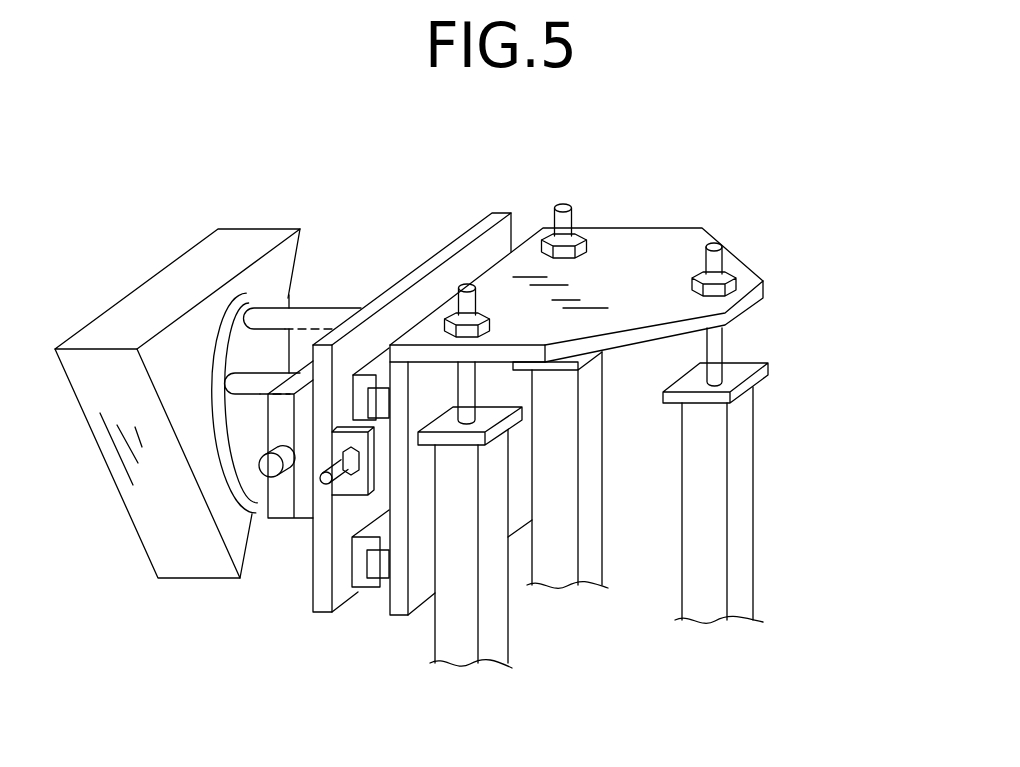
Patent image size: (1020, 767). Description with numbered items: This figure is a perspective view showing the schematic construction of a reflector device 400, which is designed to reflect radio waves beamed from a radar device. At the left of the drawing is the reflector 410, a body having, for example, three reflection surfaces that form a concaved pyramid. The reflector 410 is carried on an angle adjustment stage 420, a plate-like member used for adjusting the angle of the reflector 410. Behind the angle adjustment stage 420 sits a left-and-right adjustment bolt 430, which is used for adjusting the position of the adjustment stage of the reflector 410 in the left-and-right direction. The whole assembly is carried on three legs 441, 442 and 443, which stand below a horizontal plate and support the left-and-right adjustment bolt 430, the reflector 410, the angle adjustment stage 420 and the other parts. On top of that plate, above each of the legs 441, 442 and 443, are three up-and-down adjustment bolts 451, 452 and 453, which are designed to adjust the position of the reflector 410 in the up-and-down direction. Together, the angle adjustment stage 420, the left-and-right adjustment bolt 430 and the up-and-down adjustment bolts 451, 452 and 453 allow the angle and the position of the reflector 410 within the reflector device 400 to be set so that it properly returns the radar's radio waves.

The reflector device 400 is at (729, 154).
The reflector 410 is at (168, 282).
The angle adjustment stage 420 is at (297, 517).
The left-and-right adjustment bolt 430 is at (347, 485).
The leg 441 is at (500, 623).
The leg 442 is at (593, 492).
The leg 443 is at (743, 528).
The up-and-down adjustment bolt 451 is at (457, 315).
The up-and-down adjustment bolt 452 is at (577, 230).
The up-and-down adjustment bolt 453 is at (727, 272).